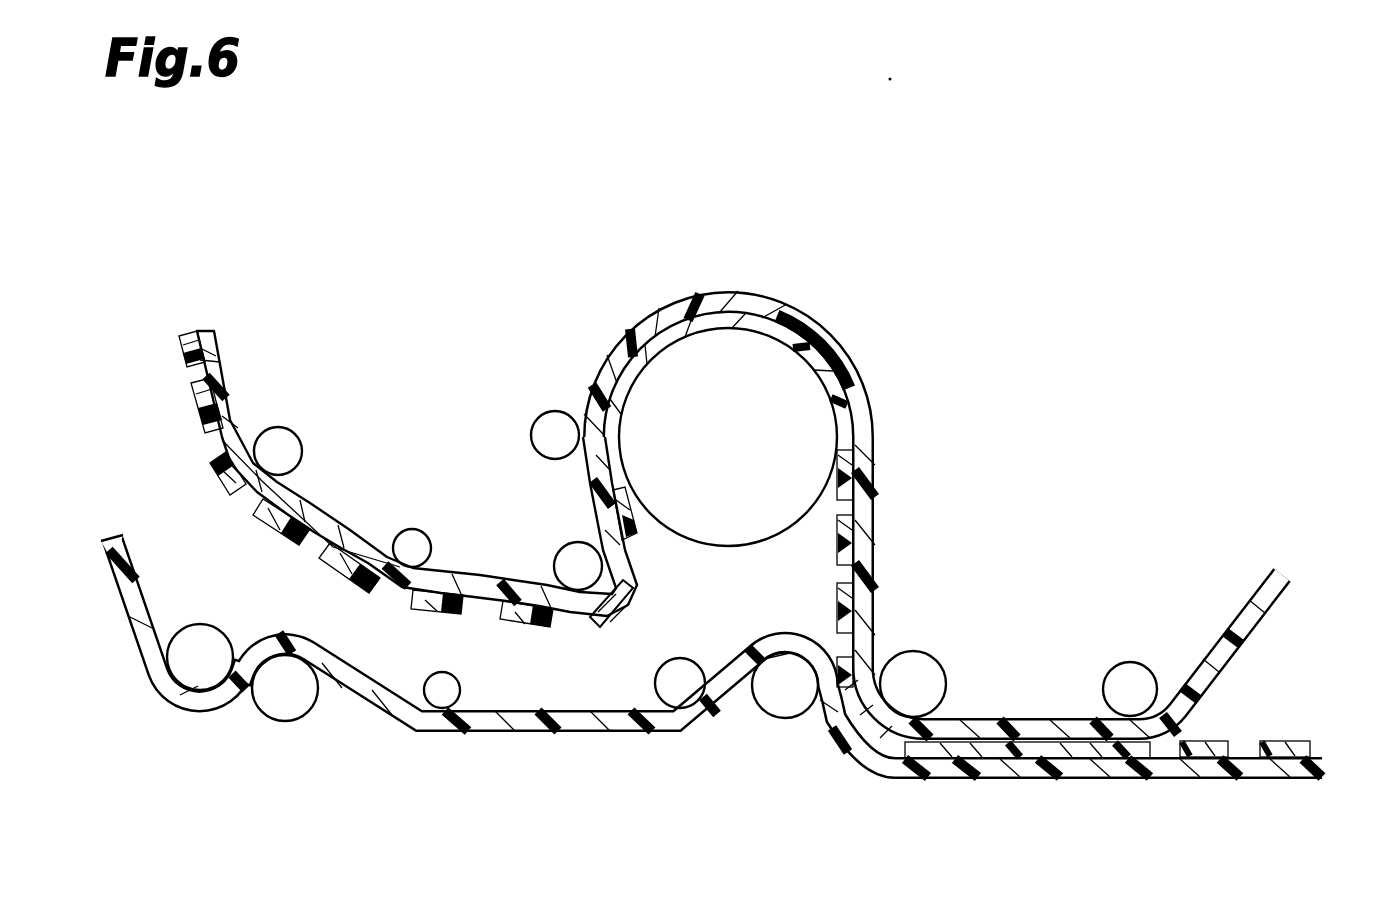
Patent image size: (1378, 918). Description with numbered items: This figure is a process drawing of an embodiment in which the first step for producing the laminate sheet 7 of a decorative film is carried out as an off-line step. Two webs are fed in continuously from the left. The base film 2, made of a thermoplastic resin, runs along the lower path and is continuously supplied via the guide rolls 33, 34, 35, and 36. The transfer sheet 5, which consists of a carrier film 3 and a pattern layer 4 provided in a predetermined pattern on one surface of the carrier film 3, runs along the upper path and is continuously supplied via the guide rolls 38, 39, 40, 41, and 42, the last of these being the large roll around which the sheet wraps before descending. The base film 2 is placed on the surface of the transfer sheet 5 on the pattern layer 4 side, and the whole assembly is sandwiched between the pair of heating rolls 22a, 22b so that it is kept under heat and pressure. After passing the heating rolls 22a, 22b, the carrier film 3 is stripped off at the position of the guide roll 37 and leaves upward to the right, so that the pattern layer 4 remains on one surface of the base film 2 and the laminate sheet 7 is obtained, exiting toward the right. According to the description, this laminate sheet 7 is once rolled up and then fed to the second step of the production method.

The base film 2 is at (112, 540).
The carrier film 3 is at (214, 349).
The pattern layer 4 is at (190, 383).
The transfer sheet 5 is at (346, 436).
The laminate sheet 7 is at (1323, 738).
The heating roll 22a is at (915, 672).
The heating roll 22b is at (785, 698).
The guide roll 33 is at (200, 645).
The guide roll 34 is at (285, 700).
The guide roll 35 is at (452, 690).
The guide roll 36 is at (681, 676).
The guide roll 37 is at (1127, 678).
The guide roll 38 is at (281, 442).
The guide roll 39 is at (412, 540).
The guide roll 40 is at (572, 557).
The guide roll 41 is at (559, 427).
The guide roll 42 is at (755, 370).